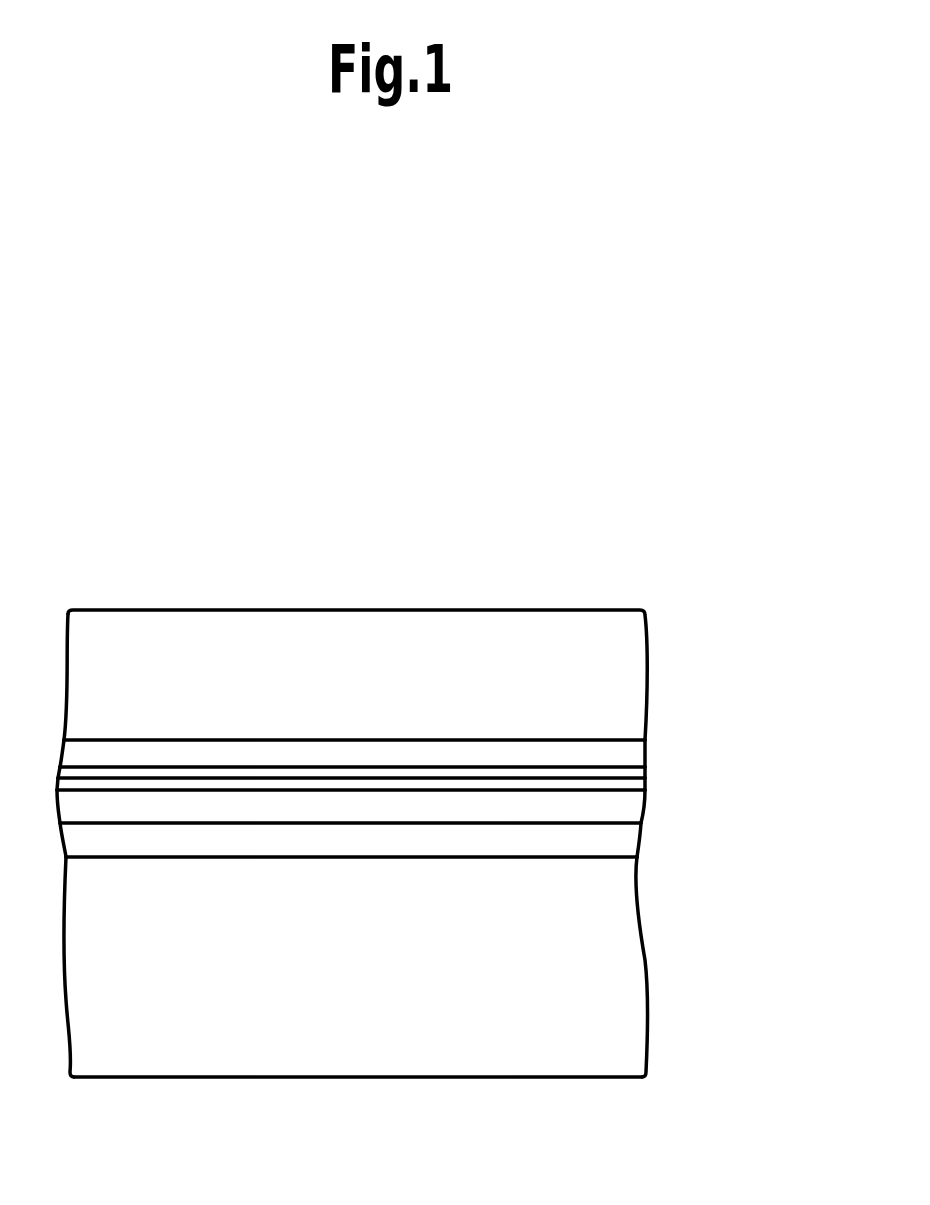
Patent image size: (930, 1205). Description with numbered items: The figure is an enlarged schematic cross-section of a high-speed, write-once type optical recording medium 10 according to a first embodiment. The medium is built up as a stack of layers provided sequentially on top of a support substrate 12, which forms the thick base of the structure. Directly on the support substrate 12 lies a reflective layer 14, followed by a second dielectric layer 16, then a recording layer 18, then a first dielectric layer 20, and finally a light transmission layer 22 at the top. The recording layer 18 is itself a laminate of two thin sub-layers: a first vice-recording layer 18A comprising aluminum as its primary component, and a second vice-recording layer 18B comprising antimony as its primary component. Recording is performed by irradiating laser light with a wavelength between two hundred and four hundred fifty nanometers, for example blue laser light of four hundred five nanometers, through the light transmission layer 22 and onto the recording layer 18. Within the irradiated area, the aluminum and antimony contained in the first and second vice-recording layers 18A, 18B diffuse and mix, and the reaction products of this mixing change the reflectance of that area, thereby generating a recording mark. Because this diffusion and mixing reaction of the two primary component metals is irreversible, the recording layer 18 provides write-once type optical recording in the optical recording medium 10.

The optical recording medium 10 is at (660, 573).
The support substrate 12 is at (626, 991).
The reflective layer 14 is at (623, 837).
The second dielectric layer 16 is at (627, 807).
The recording layer 18 is at (453, 811).
The first vice-recording layer 18A is at (645, 777).
The second vice-recording layer 18B is at (648, 782).
The first dielectric layer 20 is at (628, 752).
The light transmission layer 22 is at (637, 658).